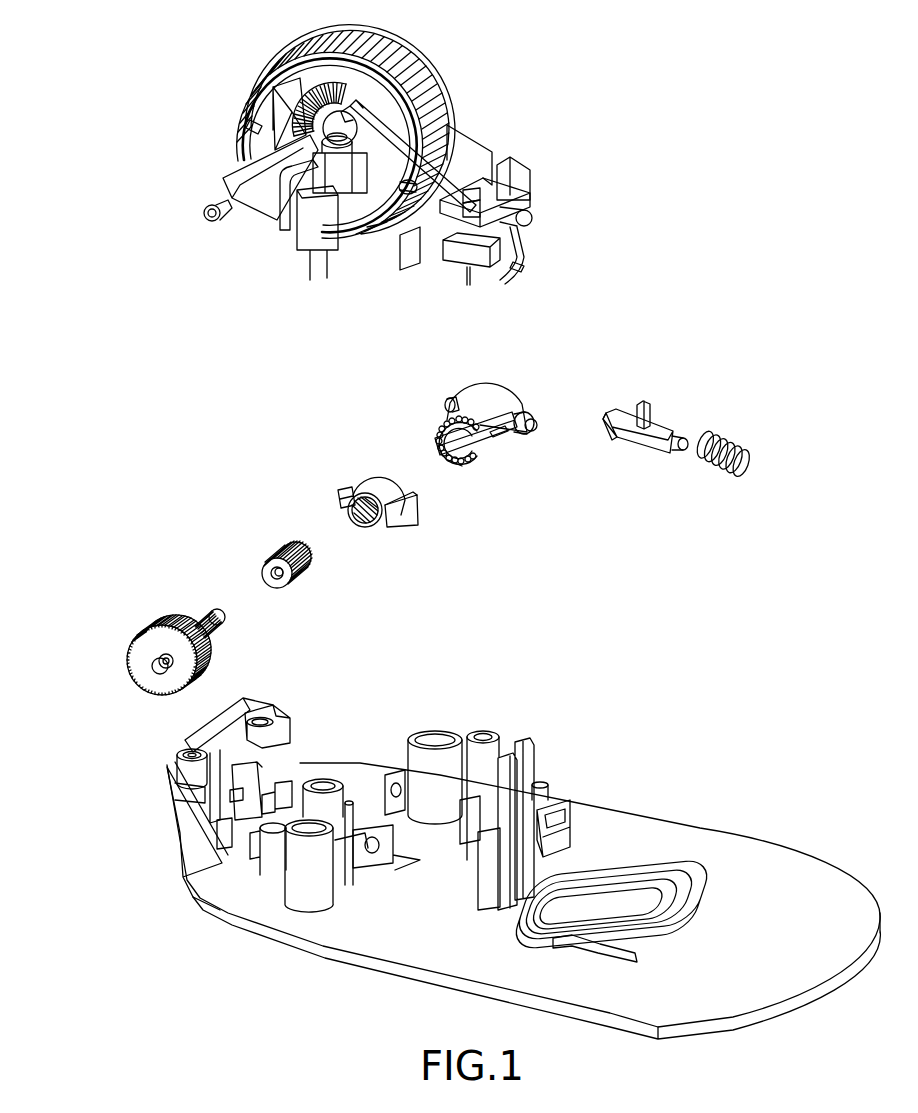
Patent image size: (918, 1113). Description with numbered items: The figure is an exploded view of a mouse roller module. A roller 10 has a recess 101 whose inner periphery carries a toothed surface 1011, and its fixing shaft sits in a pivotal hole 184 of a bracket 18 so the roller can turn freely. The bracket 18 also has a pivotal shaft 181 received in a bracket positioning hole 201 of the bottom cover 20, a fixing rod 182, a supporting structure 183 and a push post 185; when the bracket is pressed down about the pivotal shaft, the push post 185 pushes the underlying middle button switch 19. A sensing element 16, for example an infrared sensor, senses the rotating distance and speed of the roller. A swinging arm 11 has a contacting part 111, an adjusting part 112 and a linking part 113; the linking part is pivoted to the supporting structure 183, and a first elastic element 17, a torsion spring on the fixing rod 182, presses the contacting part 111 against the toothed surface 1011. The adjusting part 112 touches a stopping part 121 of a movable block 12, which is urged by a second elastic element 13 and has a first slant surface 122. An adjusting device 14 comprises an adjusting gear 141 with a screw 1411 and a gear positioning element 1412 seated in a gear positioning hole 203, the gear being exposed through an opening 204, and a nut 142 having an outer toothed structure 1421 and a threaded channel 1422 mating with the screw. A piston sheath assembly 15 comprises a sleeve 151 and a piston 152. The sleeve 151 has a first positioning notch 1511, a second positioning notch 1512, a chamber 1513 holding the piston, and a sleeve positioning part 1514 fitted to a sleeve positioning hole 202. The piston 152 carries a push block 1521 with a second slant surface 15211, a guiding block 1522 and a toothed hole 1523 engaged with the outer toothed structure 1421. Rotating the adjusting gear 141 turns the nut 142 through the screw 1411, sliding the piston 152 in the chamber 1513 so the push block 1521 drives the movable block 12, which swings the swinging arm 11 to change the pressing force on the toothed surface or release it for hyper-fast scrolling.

The roller 10 is at (357, 33).
The recess 101 is at (305, 95).
The toothed surface 1011 is at (270, 110).
The swinging arm 11 is at (716, 40).
The contacting part 111 is at (355, 117).
The adjusting part 112 is at (517, 270).
The linking part 113 is at (490, 168).
The movable block 12 is at (668, 428).
The stopping part 121 is at (648, 398).
The first slant surface 122 is at (607, 422).
The second elastic element 13 is at (728, 442).
The adjusting device 14 is at (716, 136).
The adjusting gear 141 is at (148, 648).
The screw 1411 is at (205, 615).
The gear positioning element 1412 is at (158, 668).
The nut 142 is at (280, 555).
The outer toothed structure 1421 is at (308, 578).
The channel 1422 is at (272, 578).
The piston sheath assembly 15 is at (716, 217).
The sleeve 151 is at (505, 380).
The first positioning notch 1511 is at (535, 440).
The second positioning notch 1512 is at (433, 437).
The chamber 1513 is at (460, 448).
The sleeve positioning part 1514 is at (452, 395).
The piston 152 is at (348, 505).
The push block 1521 is at (392, 520).
The second slant surface 15211 is at (402, 500).
The guiding block 1522 is at (352, 487).
The toothed hole 1523 is at (353, 512).
The sensing element 16 is at (305, 232).
The first elastic element 17 is at (435, 93).
The bracket 18 is at (250, 180).
The pivotal shaft 181 is at (205, 221).
The fixing rod 182 is at (400, 208).
The supporting structure 183 is at (525, 178).
The pivotal hole 184 is at (250, 125).
The push post 185 is at (523, 240).
The middle button switch 19 is at (475, 253).
The bottom cover 20 is at (655, 835).
The bracket positioning hole 201 is at (260, 718).
The sleeve positioning hole 202 is at (407, 790).
The gear positioning hole 203 is at (357, 843).
The opening 204 is at (378, 845).